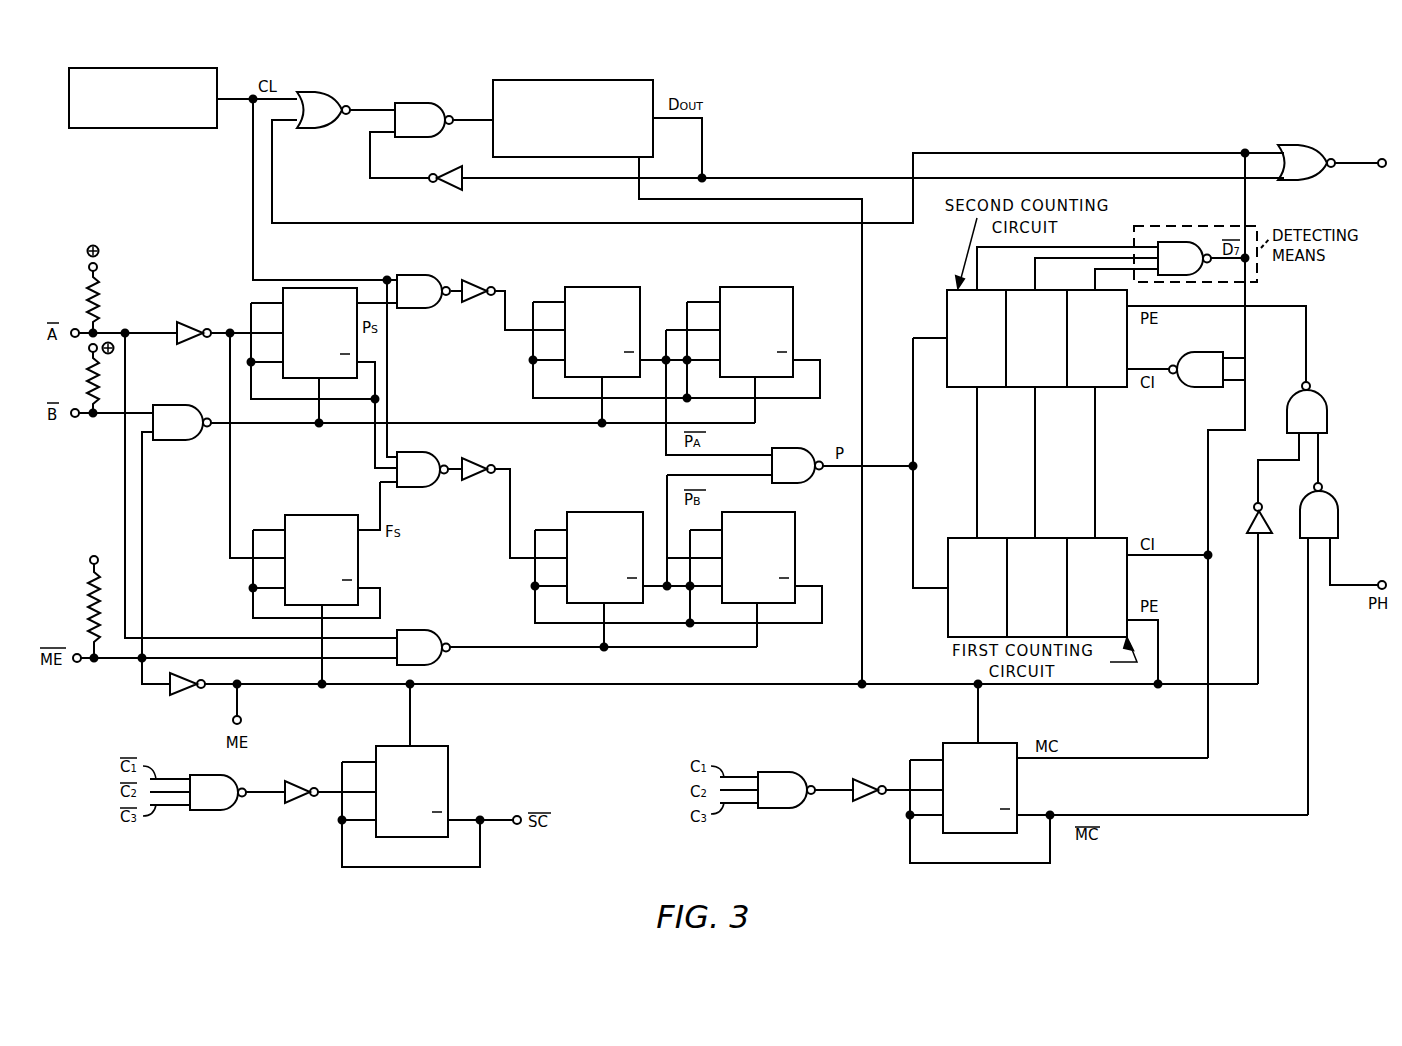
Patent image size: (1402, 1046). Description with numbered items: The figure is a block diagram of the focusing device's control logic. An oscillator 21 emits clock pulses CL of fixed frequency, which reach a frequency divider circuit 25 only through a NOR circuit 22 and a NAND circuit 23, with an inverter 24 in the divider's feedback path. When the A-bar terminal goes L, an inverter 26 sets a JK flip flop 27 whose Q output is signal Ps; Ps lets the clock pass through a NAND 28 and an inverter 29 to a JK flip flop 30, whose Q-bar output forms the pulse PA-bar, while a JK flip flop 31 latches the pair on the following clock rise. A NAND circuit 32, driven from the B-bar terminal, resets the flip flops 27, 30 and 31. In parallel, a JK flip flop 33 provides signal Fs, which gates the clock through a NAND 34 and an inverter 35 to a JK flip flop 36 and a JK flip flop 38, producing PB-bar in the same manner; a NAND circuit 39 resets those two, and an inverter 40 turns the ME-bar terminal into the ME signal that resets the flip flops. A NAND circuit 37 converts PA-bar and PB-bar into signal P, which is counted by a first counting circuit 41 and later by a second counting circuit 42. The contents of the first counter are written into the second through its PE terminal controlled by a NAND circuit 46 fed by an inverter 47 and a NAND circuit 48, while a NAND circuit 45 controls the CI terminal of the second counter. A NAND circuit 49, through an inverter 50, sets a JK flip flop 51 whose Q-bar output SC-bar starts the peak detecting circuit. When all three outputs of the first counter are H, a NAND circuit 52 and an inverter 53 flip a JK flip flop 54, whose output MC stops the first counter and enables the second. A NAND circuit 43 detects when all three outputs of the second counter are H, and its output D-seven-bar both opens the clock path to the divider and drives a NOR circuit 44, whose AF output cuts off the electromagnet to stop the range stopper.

The oscillator 21 is at (125, 128).
The NOR circuit 22 is at (328, 92).
The NAND circuit 23 is at (418, 103).
The inverter 24 is at (440, 186).
The frequency divider circuit 25 is at (574, 80).
The inverter 26 is at (188, 322).
The JK flip flop 27 is at (305, 290).
The NAND circuit 28 is at (427, 276).
The inverter 29 is at (481, 282).
The JK flip flop 30 is at (610, 288).
The JK flip flop 31 is at (765, 288).
The NAND circuit 32 is at (190, 406).
The JK flip flop 33 is at (313, 516).
The NAND circuit 34 is at (418, 487).
The inverter 35 is at (483, 460).
The JK flip flop 36 is at (602, 512).
The NAND circuit 37 is at (793, 448).
The JK flip flop 38 is at (795, 525).
The NAND circuit 39 is at (424, 632).
The inverter 40 is at (184, 696).
The first counting circuit 41 is at (950, 623).
The second counting circuit 42 is at (968, 388).
The NAND circuit 43 is at (1175, 243).
The NOR circuit 44 is at (1299, 146).
The NAND circuit 45 is at (1201, 354).
The NAND circuit 46 is at (1318, 398).
The inverter 47 is at (1248, 518).
The NAND circuit 48 is at (1332, 500).
The NAND circuit 49 is at (212, 810).
The inverter 50 is at (294, 803).
The JK flip flop 51 is at (448, 760).
The NAND circuit 52 is at (782, 773).
The inverter 53 is at (865, 780).
The JK flip flop 54 is at (995, 745).